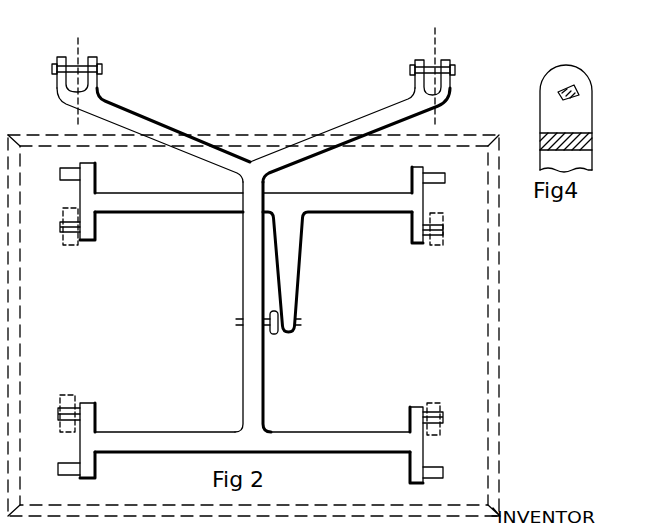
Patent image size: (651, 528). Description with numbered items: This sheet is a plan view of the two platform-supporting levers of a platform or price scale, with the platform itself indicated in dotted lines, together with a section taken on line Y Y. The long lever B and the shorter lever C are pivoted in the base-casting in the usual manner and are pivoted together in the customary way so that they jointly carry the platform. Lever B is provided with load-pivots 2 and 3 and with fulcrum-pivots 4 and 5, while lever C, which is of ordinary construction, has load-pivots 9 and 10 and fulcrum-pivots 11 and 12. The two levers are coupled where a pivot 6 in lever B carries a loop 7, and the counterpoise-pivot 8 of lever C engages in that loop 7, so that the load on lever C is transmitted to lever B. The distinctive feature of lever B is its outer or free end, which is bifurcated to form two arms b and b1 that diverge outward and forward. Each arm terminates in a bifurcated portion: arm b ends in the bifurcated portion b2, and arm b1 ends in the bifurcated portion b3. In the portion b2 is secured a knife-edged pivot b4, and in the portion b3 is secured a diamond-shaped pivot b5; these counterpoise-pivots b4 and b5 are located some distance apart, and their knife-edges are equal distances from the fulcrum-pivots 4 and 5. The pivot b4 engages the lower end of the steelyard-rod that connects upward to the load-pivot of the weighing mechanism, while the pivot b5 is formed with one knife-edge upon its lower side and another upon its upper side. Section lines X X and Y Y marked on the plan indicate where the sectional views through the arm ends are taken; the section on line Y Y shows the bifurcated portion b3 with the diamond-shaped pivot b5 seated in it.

In FIG. 2, the platform-connecting lever B is at (253, 307).
In FIG. 2, the arm b is at (195, 139).
In FIG. 2, the arm b1 is at (330, 133).
In FIG. 2, the bifurcated portion b2 is at (63, 55).
In FIG. 2, the bifurcated portion b3 is at (422, 60).
In FIG. 4, the bifurcated portion b3 is at (566, 118).
In FIG. 2, the knife-edged pivot b4 is at (92, 57).
In FIG. 2, the diamond-shaped pivot b5 is at (438, 51).
In FIG. 4, the diamond-shaped pivot b5 is at (578, 90).
In FIG. 2, the platform-supporting lever C is at (251, 247).
In FIG. 2, the section line X X is at (76, 80).
In FIG. 2, the section line Y Y is at (433, 74).
In FIG. 2, the load-pivot 2 is at (444, 417).
In FIG. 2, the load-pivot 3 is at (56, 414).
In FIG. 2, the fulcrum-pivot 4 is at (56, 469).
In FIG. 2, the fulcrum-pivot 5 is at (444, 472).
In FIG. 2, the pivot 6 is at (236, 322).
In FIG. 2, the loop 7 is at (276, 335).
In FIG. 2, the counterpoise-pivot 8 is at (302, 322).
In FIG. 2, the load-pivot 9 is at (444, 230).
In FIG. 2, the load-pivot 10 is at (58, 227).
In FIG. 2, the fulcrum-pivot 11 is at (58, 174).
In FIG. 2, the fulcrum-pivot 12 is at (446, 178).